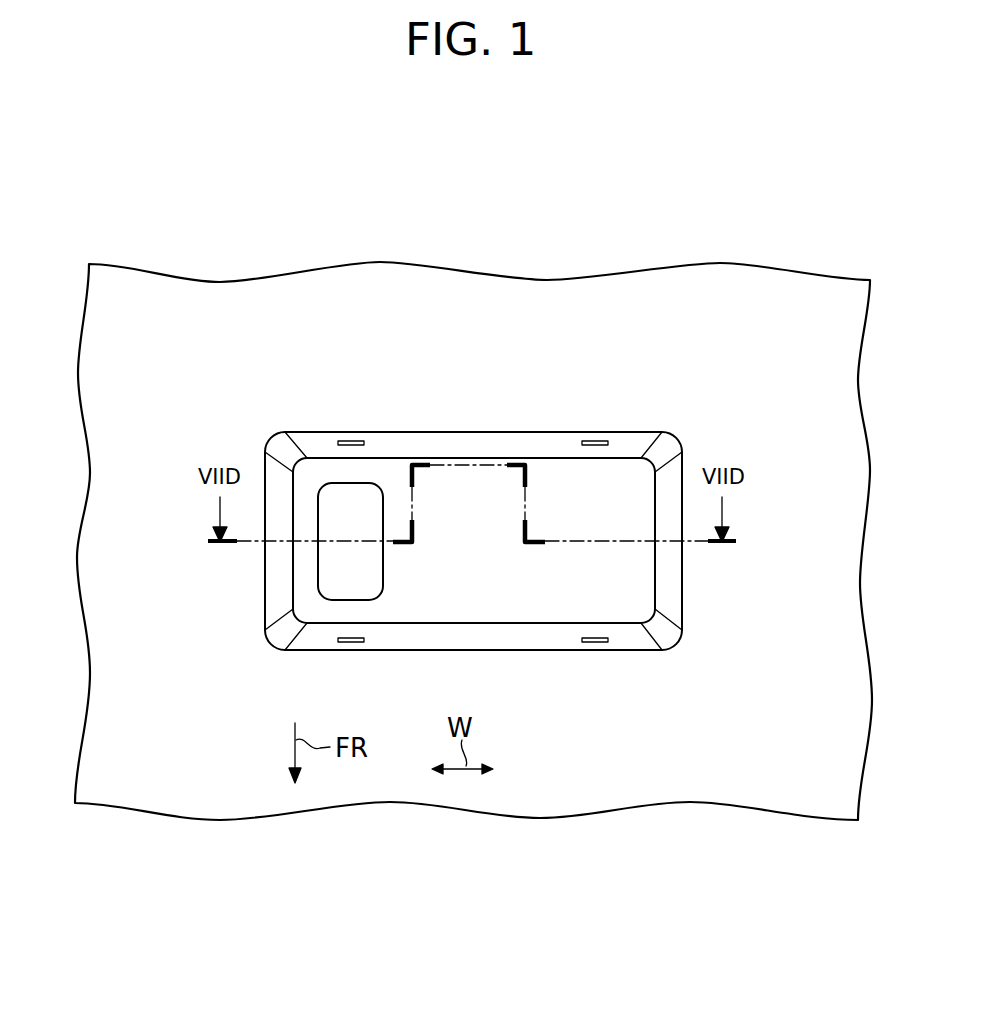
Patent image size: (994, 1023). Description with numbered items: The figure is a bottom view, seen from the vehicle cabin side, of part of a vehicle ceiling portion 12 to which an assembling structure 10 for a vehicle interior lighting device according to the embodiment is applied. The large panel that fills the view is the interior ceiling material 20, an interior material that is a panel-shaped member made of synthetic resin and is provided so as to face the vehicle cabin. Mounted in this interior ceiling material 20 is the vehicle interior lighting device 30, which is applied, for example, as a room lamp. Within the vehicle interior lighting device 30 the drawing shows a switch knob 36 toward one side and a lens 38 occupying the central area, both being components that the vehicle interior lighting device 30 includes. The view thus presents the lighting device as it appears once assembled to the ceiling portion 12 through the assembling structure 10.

The assembling structure 10 is at (518, 589).
The vehicle ceiling portion 12 is at (743, 768).
The interior ceiling material 20 is at (633, 300).
The vehicle interior lighting device 30 is at (598, 657).
The switch knob 36 is at (378, 573).
The lens 38 is at (512, 603).